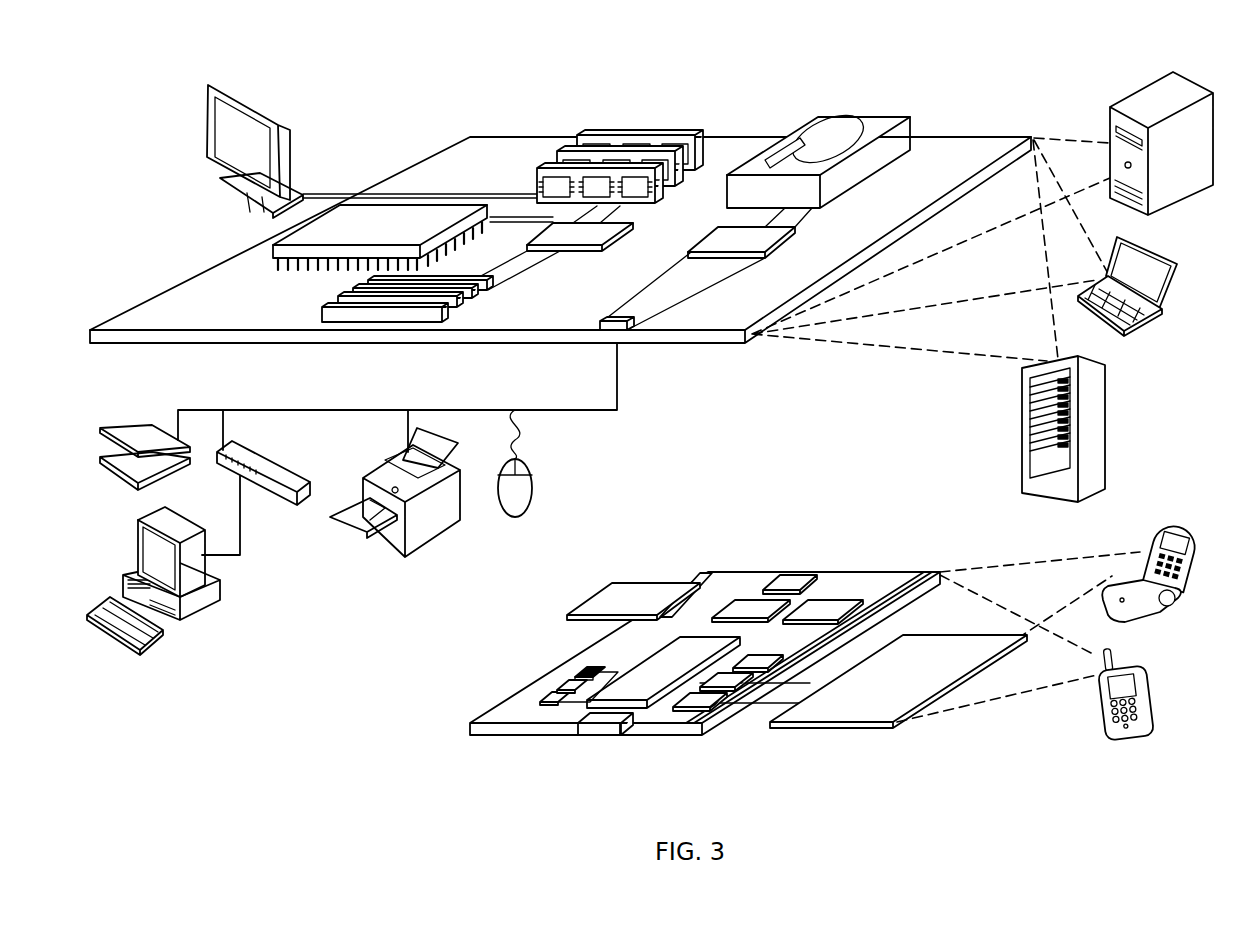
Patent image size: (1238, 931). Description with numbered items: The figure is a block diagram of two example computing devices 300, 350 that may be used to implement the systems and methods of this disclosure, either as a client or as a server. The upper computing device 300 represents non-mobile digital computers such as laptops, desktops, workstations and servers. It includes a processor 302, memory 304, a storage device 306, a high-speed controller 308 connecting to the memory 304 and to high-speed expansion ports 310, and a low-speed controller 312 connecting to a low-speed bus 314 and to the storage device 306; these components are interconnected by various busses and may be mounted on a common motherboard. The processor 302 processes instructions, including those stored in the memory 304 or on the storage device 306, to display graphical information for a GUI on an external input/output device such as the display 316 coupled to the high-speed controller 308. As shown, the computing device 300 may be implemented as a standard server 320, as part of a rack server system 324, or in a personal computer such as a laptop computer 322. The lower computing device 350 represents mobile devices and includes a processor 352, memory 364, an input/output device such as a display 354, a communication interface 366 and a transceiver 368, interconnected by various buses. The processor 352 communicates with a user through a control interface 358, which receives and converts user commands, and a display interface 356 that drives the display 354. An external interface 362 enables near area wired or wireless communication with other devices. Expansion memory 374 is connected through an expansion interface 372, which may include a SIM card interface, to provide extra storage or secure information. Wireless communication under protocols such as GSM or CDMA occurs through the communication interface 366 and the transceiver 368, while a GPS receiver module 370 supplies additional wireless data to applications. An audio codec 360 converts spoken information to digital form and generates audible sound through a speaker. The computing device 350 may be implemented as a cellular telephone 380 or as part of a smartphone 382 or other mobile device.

The computing device 300 is at (112, 101).
The processor 302 is at (272, 249).
The memory 304 is at (579, 134).
The storage device 306 is at (807, 118).
The high-speed controller 308 is at (560, 233).
The high-speed expansion ports 310 is at (337, 303).
The low-speed controller 312 is at (722, 235).
The low-speed bus 314 is at (625, 331).
The display 316 is at (209, 84).
The standard server 320 is at (1108, 122).
The laptop computer 322 is at (1172, 262).
The rack server system 324 is at (1022, 450).
The computing device 350 is at (447, 731).
The processor 352 is at (638, 694).
The display 354 is at (866, 712).
The display interface 356 is at (713, 709).
The control interface 358 is at (740, 689).
The audio codec 360 is at (760, 669).
The external interface 362 is at (603, 735).
The memory 364 is at (560, 684).
The communication interface 366 is at (750, 610).
The transceiver 368 is at (825, 609).
The GPS receiver module 370 is at (803, 576).
The expansion interface 372 is at (669, 583).
The expansion memory 374 is at (605, 583).
The cellular telephone 380 is at (1157, 533).
The smartphone 382 is at (1097, 697).